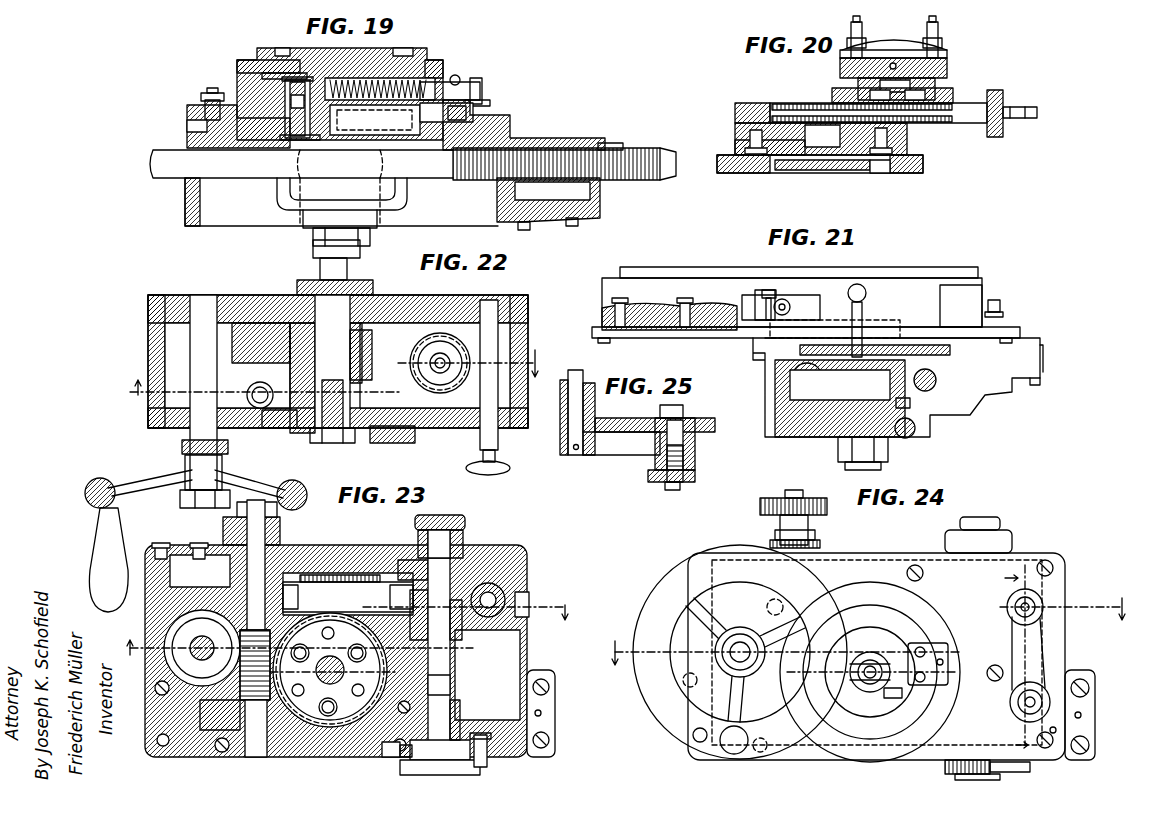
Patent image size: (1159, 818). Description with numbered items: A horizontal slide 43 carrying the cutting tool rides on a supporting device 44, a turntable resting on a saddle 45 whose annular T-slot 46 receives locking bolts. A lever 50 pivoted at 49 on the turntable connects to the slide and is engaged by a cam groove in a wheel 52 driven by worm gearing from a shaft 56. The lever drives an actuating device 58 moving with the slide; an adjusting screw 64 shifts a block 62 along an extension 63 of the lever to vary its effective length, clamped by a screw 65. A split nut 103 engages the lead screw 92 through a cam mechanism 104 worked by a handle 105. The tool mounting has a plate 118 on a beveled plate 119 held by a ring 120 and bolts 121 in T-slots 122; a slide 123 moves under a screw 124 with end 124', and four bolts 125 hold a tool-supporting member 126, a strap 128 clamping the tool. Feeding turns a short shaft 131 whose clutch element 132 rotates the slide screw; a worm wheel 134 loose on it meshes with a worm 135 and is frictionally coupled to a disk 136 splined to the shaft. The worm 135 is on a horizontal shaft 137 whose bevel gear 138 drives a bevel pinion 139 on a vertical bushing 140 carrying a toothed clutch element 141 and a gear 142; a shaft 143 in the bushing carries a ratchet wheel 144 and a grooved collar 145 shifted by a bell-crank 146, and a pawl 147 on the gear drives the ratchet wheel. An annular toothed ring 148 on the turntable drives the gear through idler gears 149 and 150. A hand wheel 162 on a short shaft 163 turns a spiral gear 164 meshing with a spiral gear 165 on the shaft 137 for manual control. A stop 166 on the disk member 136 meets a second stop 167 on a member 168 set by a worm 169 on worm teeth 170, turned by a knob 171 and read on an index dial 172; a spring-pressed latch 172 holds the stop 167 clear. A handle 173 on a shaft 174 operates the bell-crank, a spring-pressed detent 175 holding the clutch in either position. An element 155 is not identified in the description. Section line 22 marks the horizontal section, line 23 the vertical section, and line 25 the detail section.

In FIG. 19, the slide 43 is at (300, 48).
In FIG. 20, the slide 43 is at (735, 148).
In FIG. 21, the slide 43 is at (975, 262).
In FIG. 19, the supporting device 44 is at (240, 88).
In FIG. 20, the supporting device 44 is at (923, 168).
In FIG. 21, the supporting device 44 is at (967, 303).
In FIG. 19, the saddle 45 is at (195, 137).
In FIG. 19, the annular T-slot 46 is at (222, 118).
In FIG. 19, the pivot 49 is at (292, 133).
In FIG. 19, the lever 50 is at (283, 93).
In FIG. 19, the wheel 52 is at (373, 137).
In FIG. 21, the shaft 56 is at (932, 387).
In FIG. 19, the actuating device 58 is at (313, 75).
In FIG. 20, the actuating device 58 is at (813, 173).
In FIG. 19, the block 62 is at (435, 97).
In FIG. 19, the extension 63 is at (388, 83).
In FIG. 19, the adjusting screw 64 is at (466, 88).
In FIG. 21, the adjusting screw 64 is at (785, 308).
In FIG. 21, the screw 65 is at (767, 297).
In FIG. 19, the screw 92 is at (643, 177).
In FIG. 21, the screw 92 is at (797, 375).
In FIG. 19, the split nut 103 is at (585, 190).
In FIG. 21, the split nut 103 is at (790, 398).
In FIG. 21, the cam mechanism 104 is at (908, 408).
In FIG. 21, the handle 105 is at (923, 357).
In FIG. 20, the plate 118 is at (748, 103).
In FIG. 20, the plate 119 is at (865, 168).
In FIG. 20, the ring 120 is at (907, 137).
In FIG. 20, the bolts 121 is at (887, 172).
In FIG. 19, the T-slots 122 is at (415, 52).
In FIG. 20, the T-slots 122 is at (757, 173).
In FIG. 20, the slide 123 is at (953, 97).
In FIG. 20, the screw 124 is at (878, 101).
In FIG. 20, the end of screw 124' is at (1036, 110).
In FIG. 20, the bolts 125 is at (932, 27).
In FIG. 20, the tool-supporting member 126 is at (948, 66).
In FIG. 20, the strap 128 is at (910, 45).
In FIG. 22, the shaft 131 is at (328, 293).
In FIG. 23, the shaft 131 is at (335, 668).
In FIG. 22, the clutch element 132 is at (320, 266).
In FIG. 22, the worm wheel 134 is at (373, 343).
In FIG. 23, the worm 135 is at (333, 573).
In FIG. 22, the disk 136 is at (282, 427).
In FIG. 23, the horizontal shaft 137 is at (300, 597).
In FIG. 23, the bevel gear 138 is at (410, 562).
In FIG. 23, the bevel pinion 139 is at (465, 637).
In FIG. 23, the vertical bushing 140 is at (444, 670).
In FIG. 23, the toothed clutch element 141 is at (445, 708).
In FIG. 23, the gear 142 is at (395, 752).
In FIG. 23, the shaft 143 is at (440, 682).
In FIG. 23, the ratchet wheel 144 is at (417, 745).
In FIG. 23, the grooved collar 145 is at (418, 622).
In FIG. 22, the bell-crank 146 is at (468, 356).
In FIG. 23, the bell-crank 146 is at (485, 597).
In FIG. 23, the pawl 147 is at (485, 760).
In FIG. 19, the annular toothed ring 148 is at (472, 116).
In FIG. 21, the annular toothed ring 148 is at (718, 303).
In FIG. 21, the idler gear 149 is at (708, 340).
In FIG. 21, the idler gear 150 is at (650, 336).
In FIG. 21, the pin 155 is at (912, 431).
In FIG. 22, the hand wheel 162 is at (100, 488).
In FIG. 24, the hand wheel 162 is at (662, 588).
In FIG. 22, the short shaft 163 is at (198, 312).
In FIG. 23, the short shaft 163 is at (200, 650).
In FIG. 24, the short shaft 163 is at (895, 626).
In FIG. 22, the spiral gear 164 is at (152, 350).
In FIG. 23, the spiral gear 164 is at (180, 623).
In FIG. 23, the spiral gear 165 is at (183, 546).
In FIG. 24, the stop 166 is at (890, 620).
In FIG. 22, the second stop 167 is at (360, 433).
In FIG. 24, the second stop 167 is at (895, 696).
In FIG. 22, the member 168 is at (280, 424).
In FIG. 22, the worm 169 is at (252, 396).
In FIG. 23, the worm 169 is at (215, 722).
In FIG. 23, the worm teeth 170 is at (251, 628).
In FIG. 24, the knob 171 is at (760, 507).
In FIG. 24, the index dial 172 is at (775, 542).
In FIG. 25, the handle 173 is at (628, 447).
In FIG. 24, the handle 173 is at (1035, 638).
In FIG. 22, the shaft 174 is at (493, 400).
In FIG. 23, the shaft 174 is at (530, 605).
In FIG. 24, the shaft 174 is at (1032, 606).
In FIG. 25, the spring-pressed detent 175 is at (670, 490).
In FIG. 23, the section line 22 is at (349, 631).
In FIG. 24, the section line 22 is at (873, 628).
In FIG. 22, the section line 23 is at (335, 362).
In FIG. 24, the section line 25 is at (1009, 660).